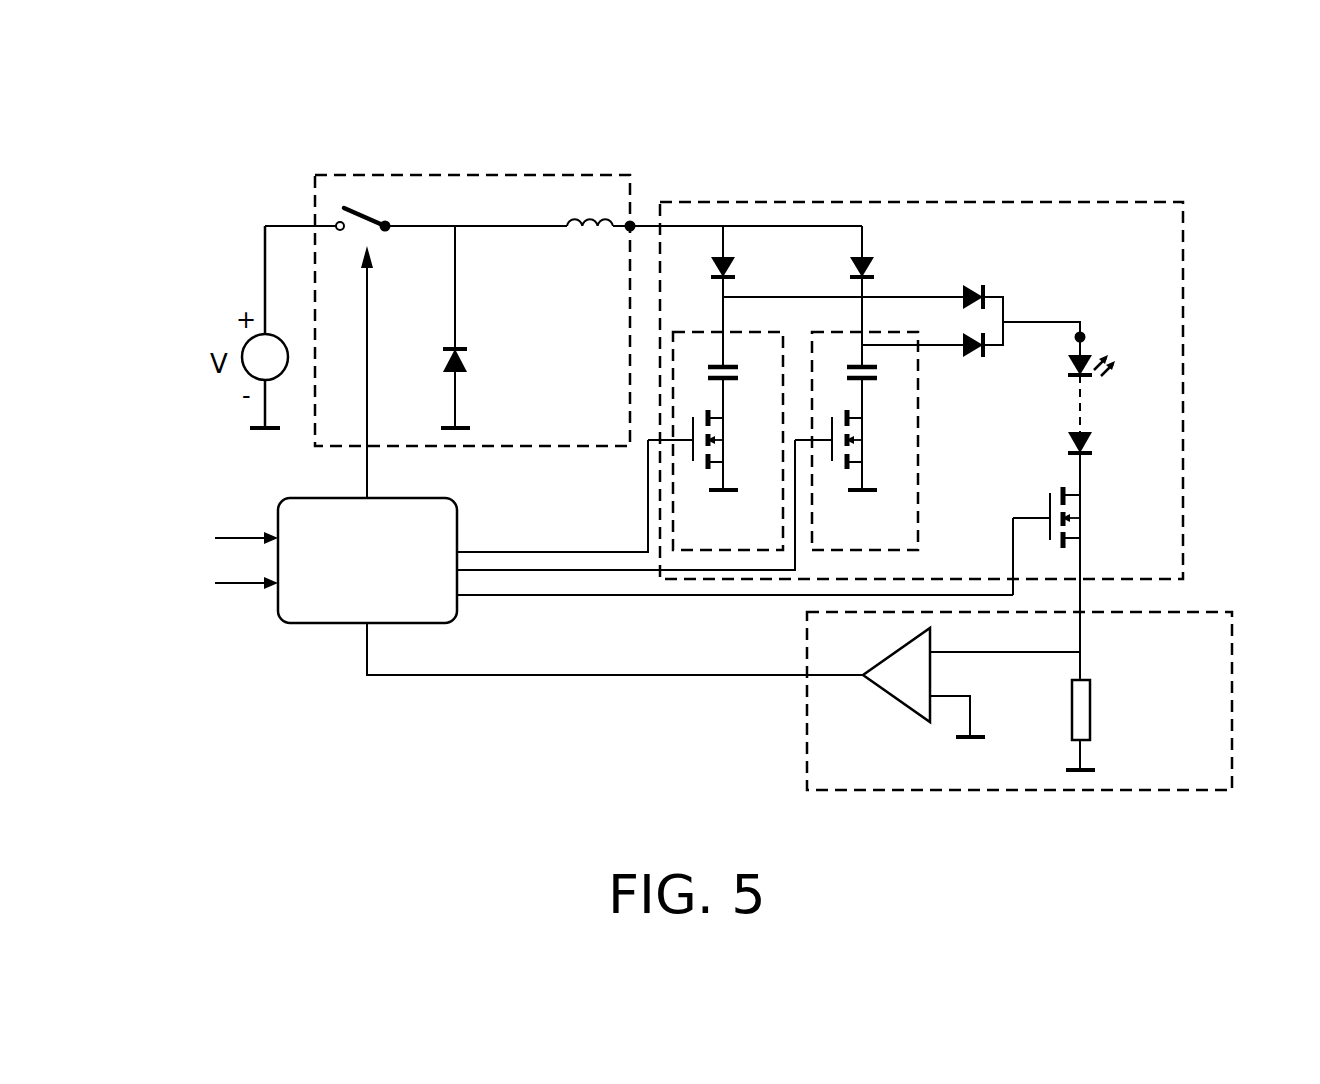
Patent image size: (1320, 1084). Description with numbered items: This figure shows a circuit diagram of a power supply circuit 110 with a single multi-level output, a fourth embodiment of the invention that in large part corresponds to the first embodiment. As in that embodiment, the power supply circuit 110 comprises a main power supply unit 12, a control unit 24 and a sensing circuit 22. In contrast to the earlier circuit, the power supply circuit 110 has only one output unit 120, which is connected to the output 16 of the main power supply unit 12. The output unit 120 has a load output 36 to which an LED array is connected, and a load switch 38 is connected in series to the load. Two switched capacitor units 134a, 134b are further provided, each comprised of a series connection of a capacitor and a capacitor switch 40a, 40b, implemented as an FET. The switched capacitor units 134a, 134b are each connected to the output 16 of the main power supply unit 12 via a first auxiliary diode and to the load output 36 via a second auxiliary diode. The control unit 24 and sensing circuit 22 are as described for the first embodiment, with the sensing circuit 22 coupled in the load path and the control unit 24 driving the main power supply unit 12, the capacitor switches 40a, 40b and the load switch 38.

The main power supply unit 12 is at (482, 175).
The output 16 is at (628, 232).
The power supply circuit 110 is at (1093, 138).
The output unit 120 is at (955, 202).
The switched capacitor unit 134a is at (673, 500).
The switched capacitor unit 134b is at (918, 478).
The capacitor switch 40a is at (726, 452).
The capacitor switch 40b is at (865, 452).
The load output 36 is at (1086, 337).
The load switch 38 is at (1083, 526).
The control unit 24 is at (310, 623).
The sensing circuit 22 is at (1232, 700).